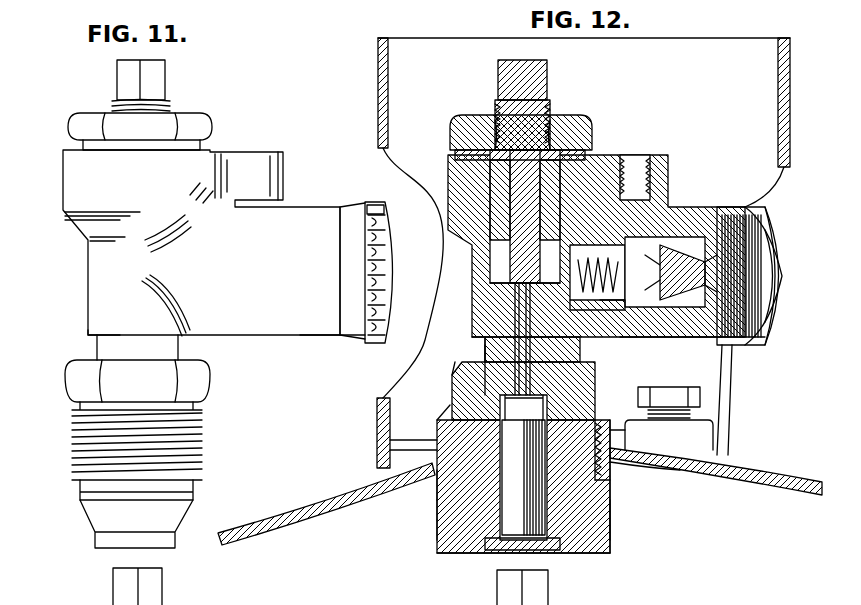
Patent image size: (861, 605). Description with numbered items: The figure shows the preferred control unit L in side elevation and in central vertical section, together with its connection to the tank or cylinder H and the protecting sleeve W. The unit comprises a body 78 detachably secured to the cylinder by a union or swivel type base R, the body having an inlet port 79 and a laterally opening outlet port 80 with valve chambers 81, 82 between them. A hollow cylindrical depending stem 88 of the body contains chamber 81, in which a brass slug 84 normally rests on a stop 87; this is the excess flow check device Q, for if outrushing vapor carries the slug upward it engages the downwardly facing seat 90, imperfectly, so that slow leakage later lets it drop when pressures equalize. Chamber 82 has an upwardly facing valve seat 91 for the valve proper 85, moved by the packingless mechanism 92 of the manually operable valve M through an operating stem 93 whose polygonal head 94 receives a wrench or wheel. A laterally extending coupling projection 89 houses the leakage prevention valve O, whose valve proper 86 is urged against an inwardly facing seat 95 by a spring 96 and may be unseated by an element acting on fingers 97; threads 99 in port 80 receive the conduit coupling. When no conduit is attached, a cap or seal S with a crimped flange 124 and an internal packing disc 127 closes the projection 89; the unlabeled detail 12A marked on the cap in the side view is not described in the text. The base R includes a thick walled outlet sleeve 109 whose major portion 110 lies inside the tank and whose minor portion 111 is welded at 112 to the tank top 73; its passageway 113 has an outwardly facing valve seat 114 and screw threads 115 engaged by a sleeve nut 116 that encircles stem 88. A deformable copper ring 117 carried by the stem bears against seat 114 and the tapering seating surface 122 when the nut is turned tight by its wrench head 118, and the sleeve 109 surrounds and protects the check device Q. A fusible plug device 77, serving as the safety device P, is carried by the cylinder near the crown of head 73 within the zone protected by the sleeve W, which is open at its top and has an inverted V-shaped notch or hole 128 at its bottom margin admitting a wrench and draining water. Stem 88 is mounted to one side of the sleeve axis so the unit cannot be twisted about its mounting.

In FIG. 12, the top 73 is at (755, 470).
In FIG. 12, the fusible plug device 77 is at (695, 412).
In FIG. 11, the body 78 is at (90, 337).
In FIG. 12, the body 78 is at (450, 352).
In FIG. 12, the inlet port 79 is at (540, 548).
In FIG. 12, the outlet port 80 is at (690, 255).
In FIG. 12, the valve chamber 81 is at (540, 410).
In FIG. 12, the valve chamber 82 is at (495, 270).
In FIG. 12, the slug 84 is at (470, 440).
In FIG. 12, the valve proper 85 is at (505, 280).
In FIG. 12, the valve proper 86 is at (655, 245).
In FIG. 12, the stop 87 is at (462, 555).
In FIG. 11, the stem 88 is at (165, 350).
In FIG. 12, the stem 88 is at (590, 365).
In FIG. 11, the coupling projection 89 is at (280, 340).
In FIG. 12, the coupling projection 89 is at (680, 340).
In FIG. 12, the seat 90 is at (470, 408).
In FIG. 12, the valve seat 91 is at (495, 286).
In FIG. 11, the mechanism 92 is at (190, 126).
In FIG. 12, the mechanism 92 is at (470, 172).
In FIG. 12, the operating stem 93 is at (545, 128).
In FIG. 11, the polygonal head 94 is at (155, 80).
In FIG. 12, the polygonal head 94 is at (547, 78).
In FIG. 12, the seat 95 is at (650, 348).
In FIG. 12, the spring 96 is at (620, 150).
In FIG. 12, the fingers 97 is at (770, 227).
In FIG. 12, the threads 99 is at (762, 322).
In FIG. 12, the outlet sleeve 109 is at (640, 475).
In FIG. 12, the major portion 110 is at (610, 520).
In FIG. 12, the minor portion 111 is at (400, 442).
In FIG. 12, the weld 112 is at (400, 453).
In FIG. 12, the passageway 113 is at (480, 555).
In FIG. 12, the valve seat 114 is at (445, 512).
In FIG. 12, the screw threads 115 is at (612, 438).
In FIG. 12, the sleeve nut 116 is at (585, 395).
In FIG. 11, the ring 117 is at (178, 514).
In FIG. 12, the ring 117 is at (610, 500).
In FIG. 12, the wrench head 118 is at (460, 376).
In FIG. 12, the seating surface 122 is at (445, 530).
In FIG. 12, the crimped flange 124 is at (740, 355).
In FIG. 12, the packing disc 127 is at (770, 285).
In FIG. 12, the notch or hole 128 is at (775, 182).
In FIG. 11, the knob rib 12A is at (372, 212).
In FIG. 11, the tank or cylinder H is at (295, 510).
In FIG. 11, the control unit L is at (200, 338).
In FIG. 12, the control unit L is at (575, 345).
In FIG. 11, the manually operable valve M is at (195, 147).
In FIG. 12, the manually operable valve M is at (495, 267).
In FIG. 12, the leakage prevention valve O is at (640, 265).
In FIG. 12, the safety device P is at (680, 430).
In FIG. 12, the excess flow check device Q is at (445, 490).
In FIG. 11, the union or swivel type base R is at (193, 408).
In FIG. 12, the union or swivel type base R is at (610, 485).
In FIG. 11, the cap or seal S is at (392, 297).
In FIG. 12, the cap or seal S is at (790, 258).
In FIG. 12, the protecting sleeve W is at (790, 108).